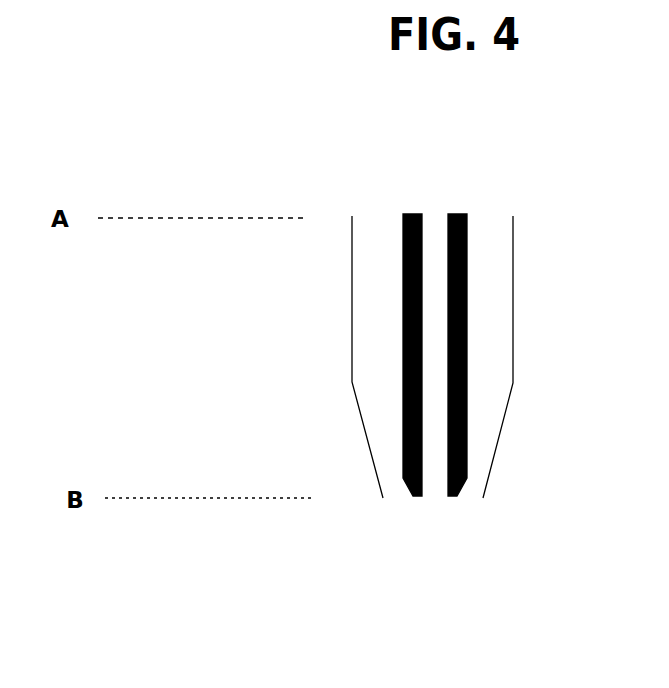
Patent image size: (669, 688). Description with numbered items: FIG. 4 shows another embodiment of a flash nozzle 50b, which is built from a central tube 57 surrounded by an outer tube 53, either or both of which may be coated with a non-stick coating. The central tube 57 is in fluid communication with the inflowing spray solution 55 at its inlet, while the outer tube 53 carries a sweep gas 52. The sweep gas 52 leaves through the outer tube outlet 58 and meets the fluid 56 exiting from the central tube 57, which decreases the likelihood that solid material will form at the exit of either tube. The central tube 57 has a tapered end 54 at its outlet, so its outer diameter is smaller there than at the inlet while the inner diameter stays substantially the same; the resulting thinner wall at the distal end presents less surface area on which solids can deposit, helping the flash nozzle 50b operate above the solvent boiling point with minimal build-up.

The nozzle / outlet assembly 50b is at (545, 332).
The outer flow channels 52 is at (432, 308).
The outer wall 53 is at (350, 325).
The chamfered tip surfaces 54 is at (400, 485).
The central flow channel 55 is at (435, 223).
The outlet 56 is at (435, 563).
The inner partition bars 57 is at (466, 288).
The tips of partition bars 58 is at (397, 497).